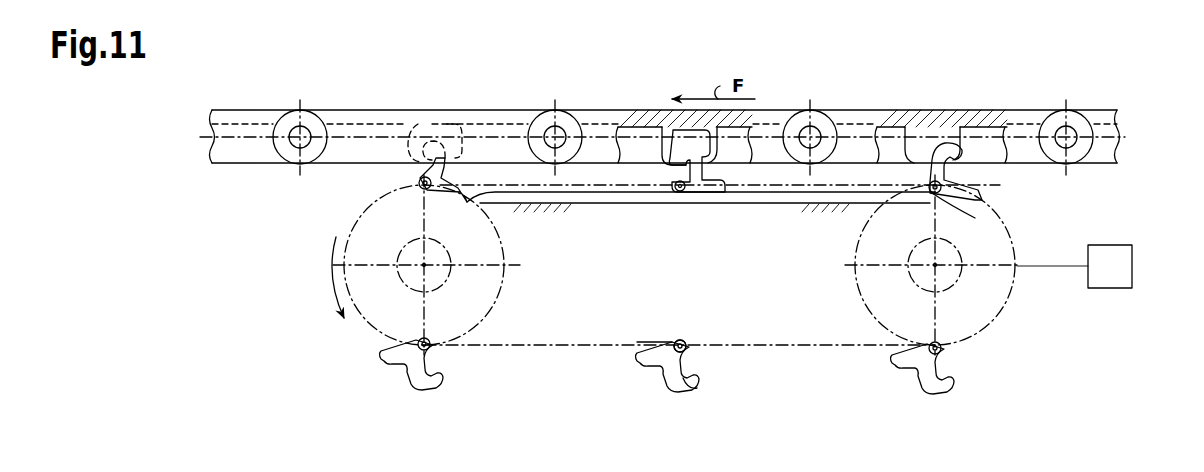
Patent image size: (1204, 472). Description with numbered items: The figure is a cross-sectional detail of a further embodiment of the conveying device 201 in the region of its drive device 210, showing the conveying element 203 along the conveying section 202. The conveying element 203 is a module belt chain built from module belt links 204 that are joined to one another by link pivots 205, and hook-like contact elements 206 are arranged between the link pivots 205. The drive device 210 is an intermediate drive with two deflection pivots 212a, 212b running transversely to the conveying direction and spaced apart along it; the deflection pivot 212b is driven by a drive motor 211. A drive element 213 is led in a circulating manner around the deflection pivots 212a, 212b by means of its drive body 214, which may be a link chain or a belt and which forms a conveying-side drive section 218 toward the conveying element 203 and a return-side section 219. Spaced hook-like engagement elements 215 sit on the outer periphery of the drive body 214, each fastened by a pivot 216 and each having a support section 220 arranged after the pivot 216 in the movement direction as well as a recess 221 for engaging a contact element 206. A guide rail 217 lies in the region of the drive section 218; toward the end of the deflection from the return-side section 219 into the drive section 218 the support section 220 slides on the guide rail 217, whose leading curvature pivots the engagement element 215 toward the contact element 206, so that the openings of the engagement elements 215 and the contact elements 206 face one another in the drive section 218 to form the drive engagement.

The conveying device 201 is at (1020, 108).
The conveying section 202 is at (375, 100).
The conveying element 203 is at (268, 108).
The module belt link 204 is at (648, 118).
The link pivot 205 is at (548, 125).
The contact element 206 is at (910, 135).
The drive device 210 is at (355, 213).
The drive motor 211 is at (1118, 272).
The deflection pivot 212a is at (424, 265).
The deflection pivot 212b is at (935, 266).
The drive element 213 is at (517, 345).
The drive body 214 is at (812, 348).
The engagement element 215 is at (663, 375).
The pivot 216 is at (684, 342).
The guide rail 217 is at (640, 197).
The drive section 218 is at (587, 181).
The return-side section 219 is at (583, 345).
The support section 220 is at (672, 343).
The recess 221 is at (688, 366).